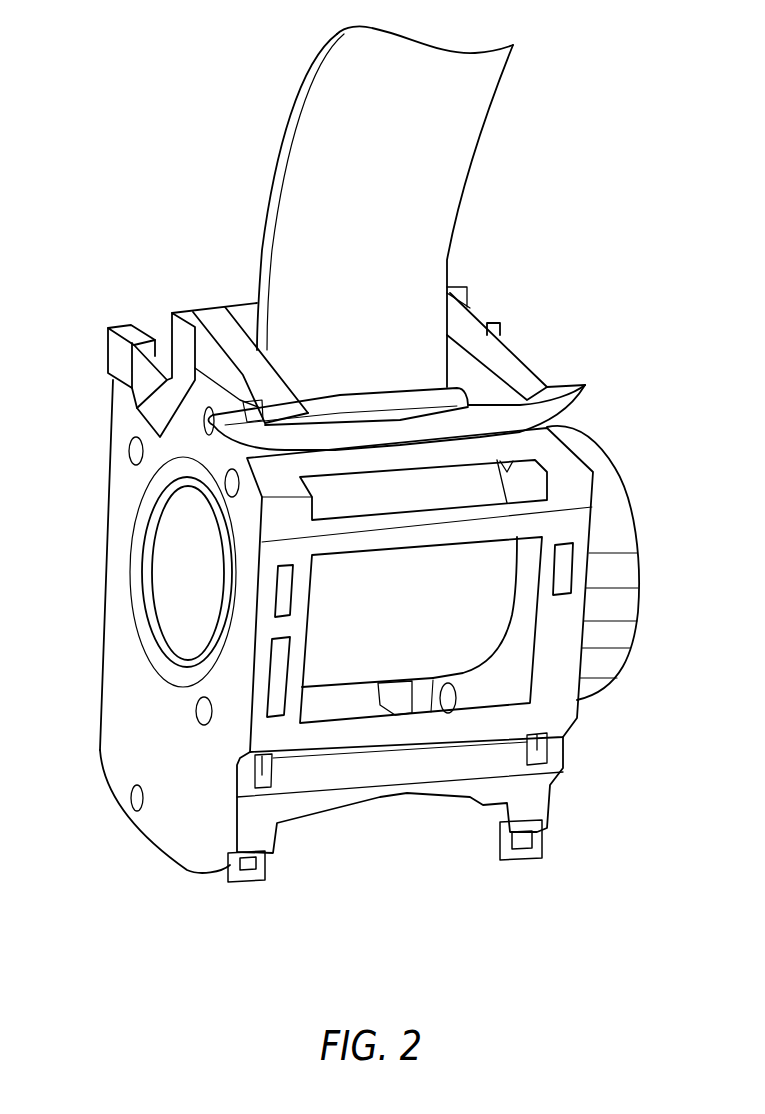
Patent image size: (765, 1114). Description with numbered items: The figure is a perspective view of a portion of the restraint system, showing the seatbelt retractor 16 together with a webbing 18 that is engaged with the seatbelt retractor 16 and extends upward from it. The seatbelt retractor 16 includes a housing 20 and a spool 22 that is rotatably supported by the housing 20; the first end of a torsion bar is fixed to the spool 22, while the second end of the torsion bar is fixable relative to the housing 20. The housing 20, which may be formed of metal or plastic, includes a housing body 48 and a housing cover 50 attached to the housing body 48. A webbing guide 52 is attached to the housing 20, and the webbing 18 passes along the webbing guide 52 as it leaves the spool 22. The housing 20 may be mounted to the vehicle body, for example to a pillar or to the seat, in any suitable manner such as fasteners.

The seatbelt retractor 16 is at (86, 192).
The media sheet 18 is at (468, 177).
The housing 20 is at (112, 775).
The spool 22 is at (497, 653).
The housing body 48 is at (190, 873).
The housing cover 50 is at (258, 880).
The webbing guide 52 is at (585, 385).